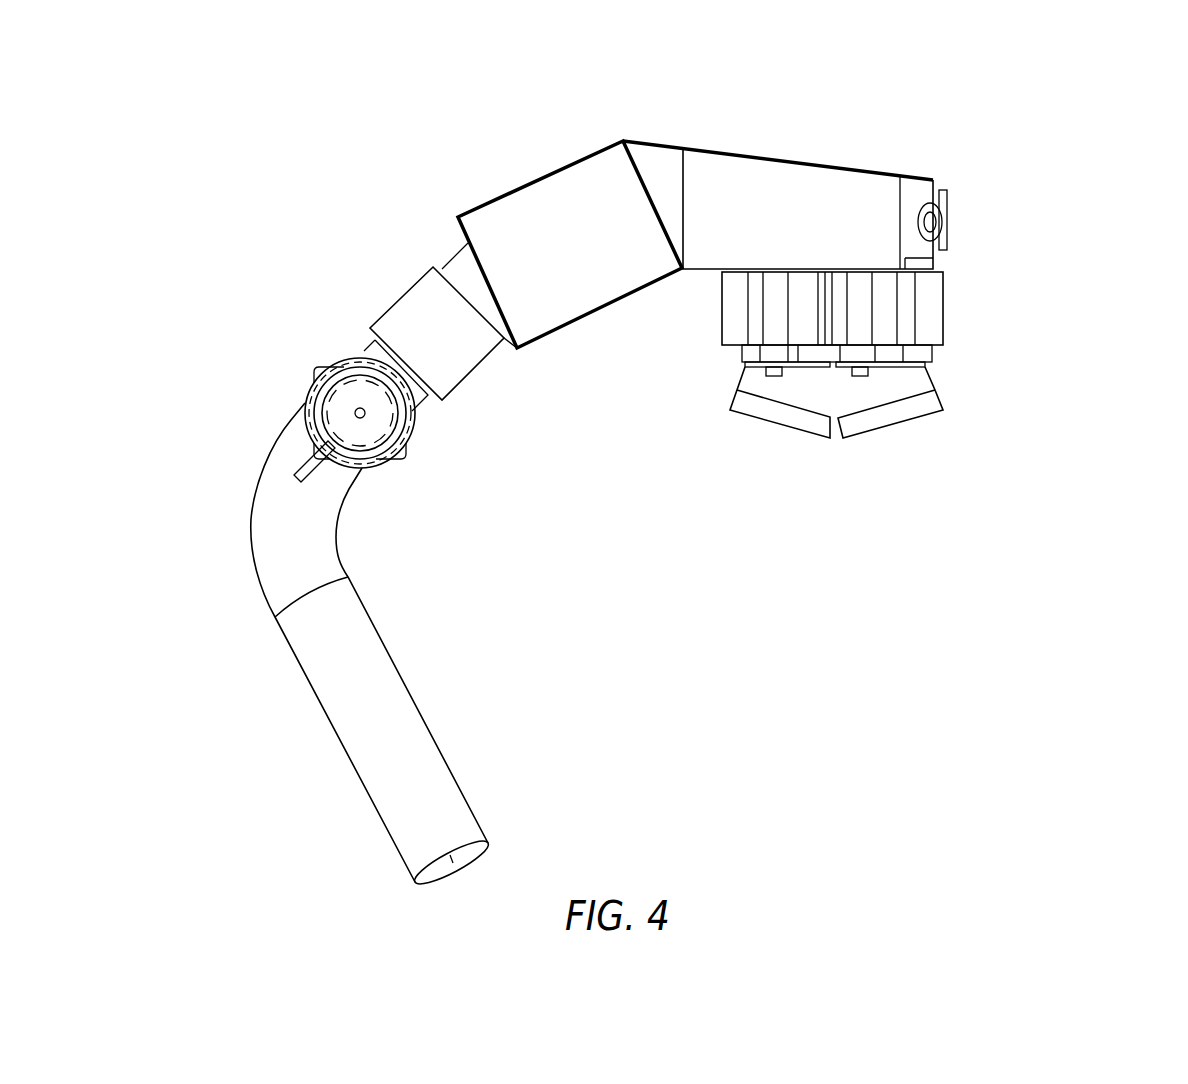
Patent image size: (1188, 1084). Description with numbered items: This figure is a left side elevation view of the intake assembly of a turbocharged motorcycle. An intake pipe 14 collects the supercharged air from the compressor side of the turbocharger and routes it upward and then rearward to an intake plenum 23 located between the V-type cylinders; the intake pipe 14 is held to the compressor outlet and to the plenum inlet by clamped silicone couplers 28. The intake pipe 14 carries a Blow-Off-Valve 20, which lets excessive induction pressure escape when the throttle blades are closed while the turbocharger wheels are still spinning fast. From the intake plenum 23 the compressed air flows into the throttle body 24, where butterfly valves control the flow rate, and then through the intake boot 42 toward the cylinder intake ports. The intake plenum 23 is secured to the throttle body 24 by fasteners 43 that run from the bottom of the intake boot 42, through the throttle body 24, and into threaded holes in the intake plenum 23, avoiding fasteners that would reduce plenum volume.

The intake pipe 14 is at (343, 668).
The Blow-Off-Valve 20 is at (335, 413).
The intake plenum 23 is at (783, 218).
The throttle body 24 is at (890, 308).
The clamped silicone coupler 28 is at (475, 358).
The intake boot 42 is at (890, 392).
The fasteners 43 is at (775, 376).